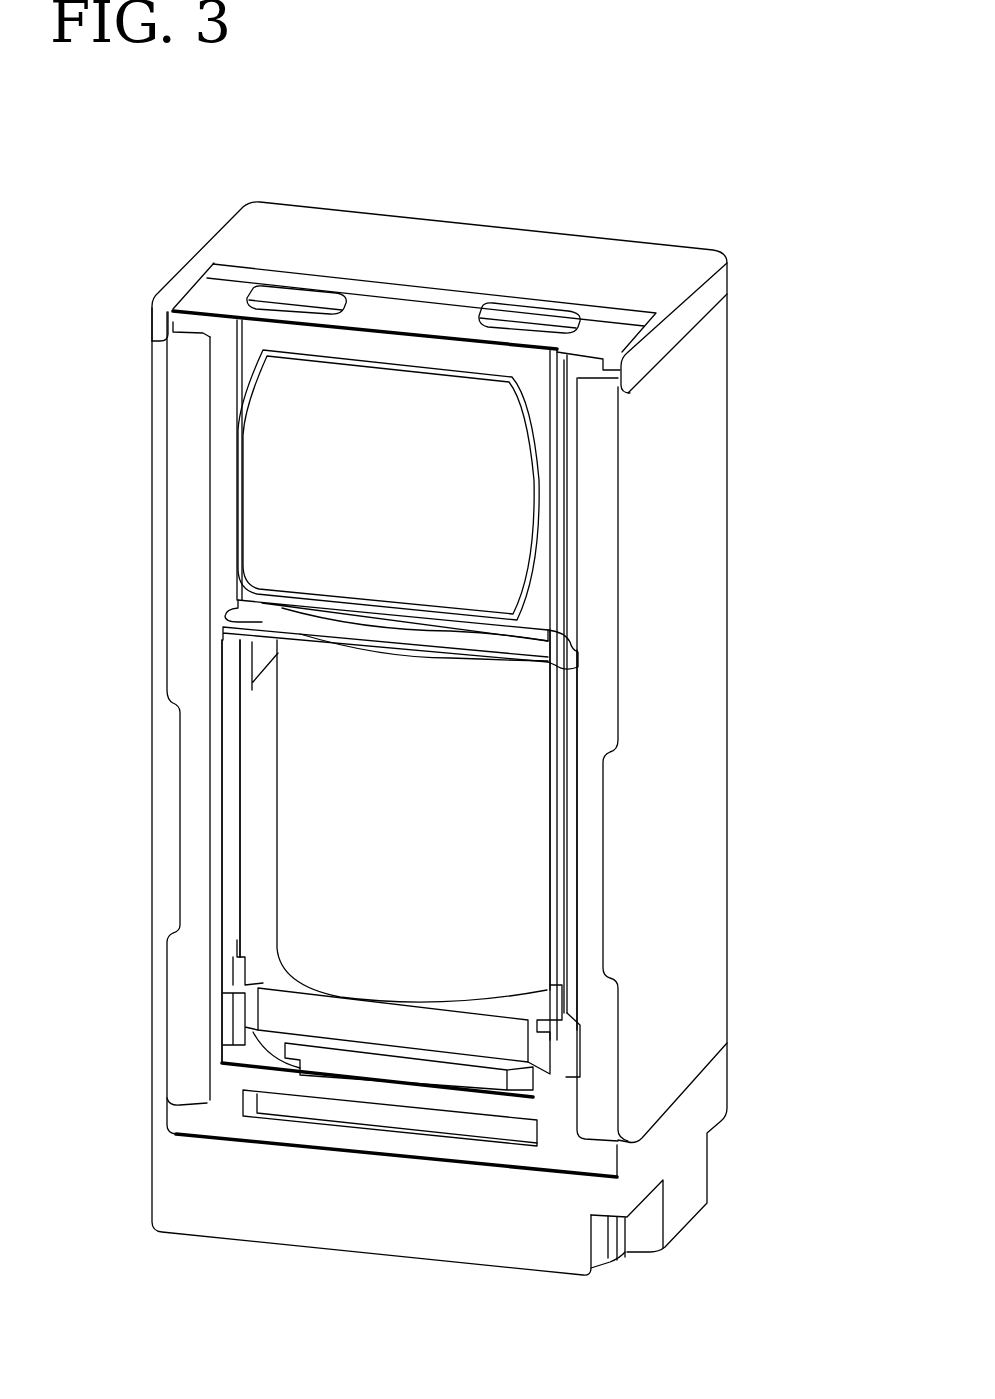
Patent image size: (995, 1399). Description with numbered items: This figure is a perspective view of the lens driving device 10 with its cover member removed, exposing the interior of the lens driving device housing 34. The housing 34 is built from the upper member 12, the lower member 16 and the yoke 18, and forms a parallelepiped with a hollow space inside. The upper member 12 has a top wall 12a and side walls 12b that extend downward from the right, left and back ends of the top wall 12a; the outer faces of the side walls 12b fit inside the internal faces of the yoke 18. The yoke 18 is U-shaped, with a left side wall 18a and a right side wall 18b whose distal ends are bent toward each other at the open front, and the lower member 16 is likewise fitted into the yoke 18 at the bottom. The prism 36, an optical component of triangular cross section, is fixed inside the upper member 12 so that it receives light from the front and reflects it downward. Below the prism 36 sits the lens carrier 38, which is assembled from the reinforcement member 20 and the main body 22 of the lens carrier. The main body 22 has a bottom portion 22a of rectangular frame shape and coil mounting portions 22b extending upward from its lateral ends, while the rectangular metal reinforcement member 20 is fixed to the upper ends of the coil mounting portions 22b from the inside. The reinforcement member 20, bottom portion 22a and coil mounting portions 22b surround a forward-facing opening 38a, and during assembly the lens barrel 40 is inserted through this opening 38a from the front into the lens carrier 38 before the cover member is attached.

The lens driving device 10 is at (742, 136).
The upper member 12 is at (465, 222).
The top wall 12a is at (318, 224).
The side walls 12b is at (220, 387).
The lower member 16 is at (724, 1083).
The yoke 18 is at (728, 432).
The left side wall 18a is at (152, 490).
The right side wall 18b is at (668, 775).
The reinforcement member 20 is at (238, 627).
The main body of the lens carrier 22 is at (222, 838).
The bottom portion 22a is at (270, 1015).
The coil mounting portions 22b is at (222, 795).
The lens driving device housing 34 is at (728, 694).
The prism 36 is at (285, 500).
The lens carrier 38 is at (221, 678).
The opening 38a is at (262, 898).
The lens barrel 40 is at (512, 892).